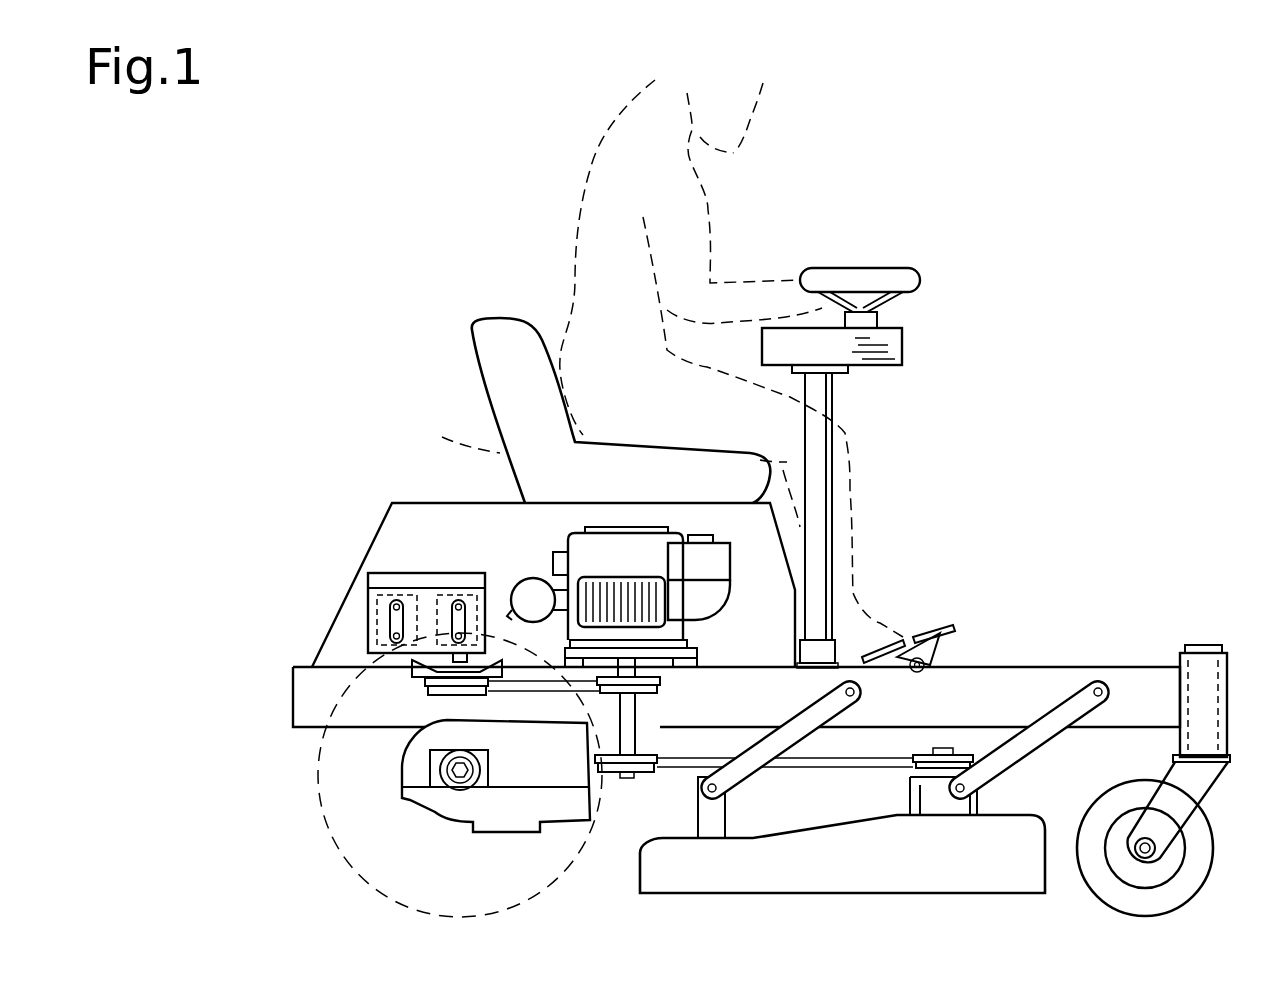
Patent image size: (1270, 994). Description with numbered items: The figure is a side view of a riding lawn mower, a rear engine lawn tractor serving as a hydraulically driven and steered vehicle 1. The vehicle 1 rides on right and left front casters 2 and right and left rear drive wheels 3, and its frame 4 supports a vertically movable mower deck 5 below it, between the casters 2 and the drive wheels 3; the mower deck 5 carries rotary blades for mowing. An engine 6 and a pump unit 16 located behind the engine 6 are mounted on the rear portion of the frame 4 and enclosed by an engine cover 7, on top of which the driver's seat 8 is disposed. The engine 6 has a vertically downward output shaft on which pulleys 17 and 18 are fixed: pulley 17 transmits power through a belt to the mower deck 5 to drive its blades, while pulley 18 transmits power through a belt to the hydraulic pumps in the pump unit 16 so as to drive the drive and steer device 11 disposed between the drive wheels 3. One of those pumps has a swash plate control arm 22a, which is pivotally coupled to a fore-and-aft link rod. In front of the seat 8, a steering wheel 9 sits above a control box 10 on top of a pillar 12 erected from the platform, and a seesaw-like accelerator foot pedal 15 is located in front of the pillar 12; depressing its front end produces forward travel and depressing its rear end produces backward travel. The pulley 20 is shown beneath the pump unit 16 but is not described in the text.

The vehicle 1 is at (1166, 240).
The front caster 2 is at (1195, 840).
The rear drive wheel 3 is at (320, 806).
The frame 4 is at (1133, 680).
The mower deck 5 is at (948, 874).
The engine 6 is at (528, 568).
The engine cover 7 is at (395, 503).
The driver's seat 8 is at (490, 442).
The steering wheel 9 is at (895, 275).
The control box 10 is at (905, 346).
The drive and steer device 11 is at (480, 818).
The pillar 12 is at (820, 478).
The accelerator foot pedal 15 is at (945, 636).
The pump unit 16 is at (387, 586).
The pulley 17 is at (648, 775).
The pulley 18 is at (655, 690).
The drive pulley 20 is at (432, 692).
The swash plate control arm 22a is at (440, 600).